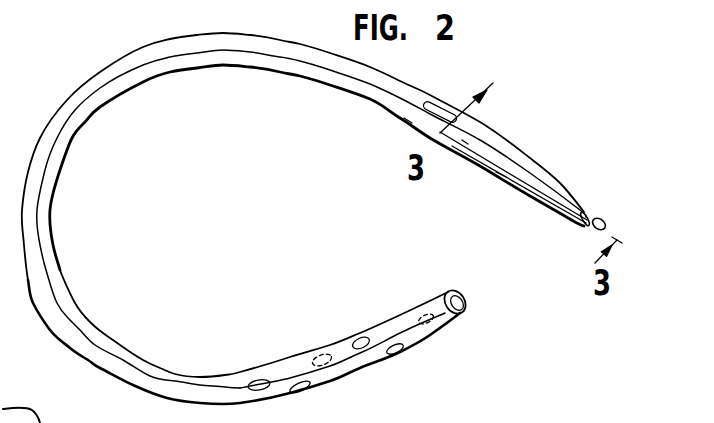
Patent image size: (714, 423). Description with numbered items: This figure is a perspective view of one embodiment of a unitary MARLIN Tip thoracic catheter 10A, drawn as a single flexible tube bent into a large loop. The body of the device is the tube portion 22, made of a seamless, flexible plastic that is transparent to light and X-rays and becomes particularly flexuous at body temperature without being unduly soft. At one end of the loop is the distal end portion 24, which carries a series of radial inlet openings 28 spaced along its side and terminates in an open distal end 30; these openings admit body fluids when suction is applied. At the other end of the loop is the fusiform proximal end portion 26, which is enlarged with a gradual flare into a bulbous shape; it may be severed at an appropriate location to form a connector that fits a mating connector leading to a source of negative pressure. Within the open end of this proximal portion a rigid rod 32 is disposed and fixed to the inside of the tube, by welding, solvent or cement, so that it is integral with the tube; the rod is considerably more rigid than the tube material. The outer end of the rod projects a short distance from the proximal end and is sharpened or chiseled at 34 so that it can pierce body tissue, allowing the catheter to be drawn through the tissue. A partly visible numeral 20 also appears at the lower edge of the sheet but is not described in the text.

The catheter 10A is at (305, 211).
The catheter body portion 20 is at (95, 415).
The tube portion 22 is at (47, 262).
The distal end portion 24 is at (369, 327).
The fusiform proximal end portion 26 is at (483, 120).
The radial inlet openings 28 is at (308, 389).
The open distal end 30 is at (470, 296).
The rigid rod 32 is at (532, 180).
The sharpened or chiseled end 34 is at (594, 234).